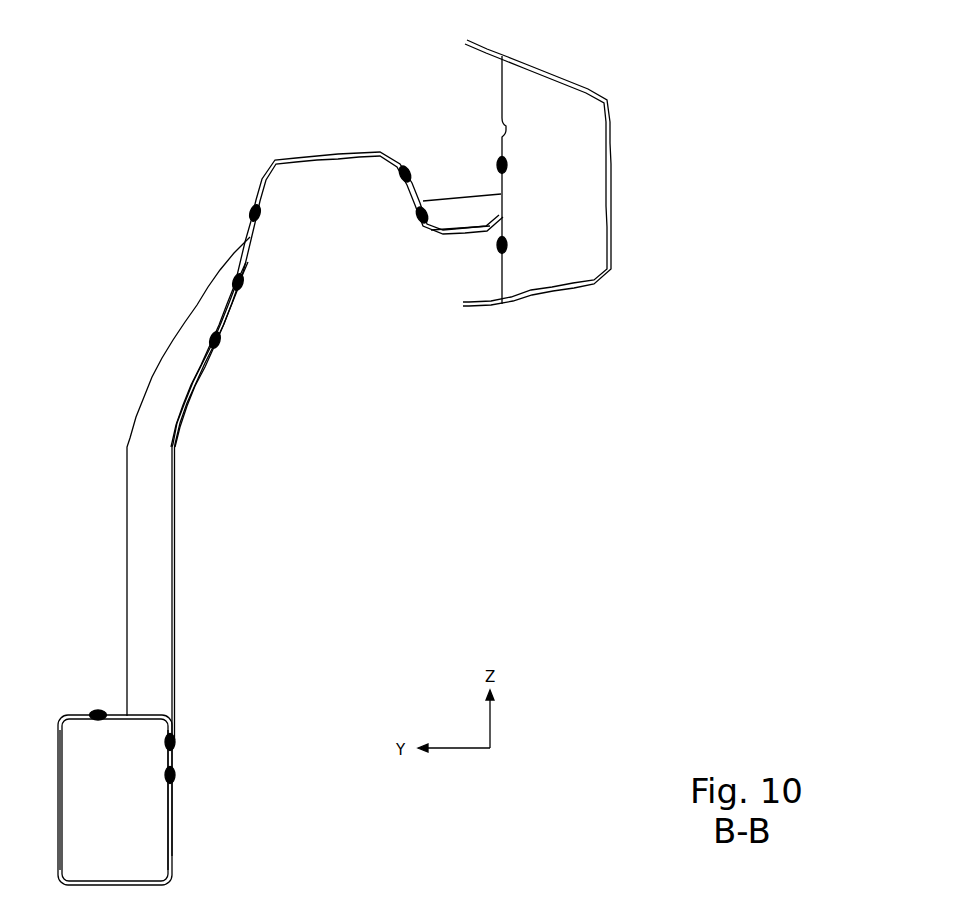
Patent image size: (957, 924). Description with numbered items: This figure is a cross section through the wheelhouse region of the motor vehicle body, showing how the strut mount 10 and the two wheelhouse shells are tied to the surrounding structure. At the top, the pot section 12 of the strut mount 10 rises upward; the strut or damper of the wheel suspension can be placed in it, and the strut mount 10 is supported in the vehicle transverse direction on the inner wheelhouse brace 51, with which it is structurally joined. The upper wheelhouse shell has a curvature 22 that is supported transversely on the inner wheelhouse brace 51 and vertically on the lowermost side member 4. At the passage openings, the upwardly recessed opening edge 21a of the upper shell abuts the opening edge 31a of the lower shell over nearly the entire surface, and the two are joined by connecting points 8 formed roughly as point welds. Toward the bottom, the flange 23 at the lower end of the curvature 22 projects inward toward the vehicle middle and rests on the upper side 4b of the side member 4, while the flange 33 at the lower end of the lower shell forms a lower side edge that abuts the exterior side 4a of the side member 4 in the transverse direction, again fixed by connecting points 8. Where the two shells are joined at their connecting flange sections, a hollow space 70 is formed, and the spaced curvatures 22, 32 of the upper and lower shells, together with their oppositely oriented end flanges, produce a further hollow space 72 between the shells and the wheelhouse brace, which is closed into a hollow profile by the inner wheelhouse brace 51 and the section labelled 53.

The strut mount 10 is at (330, 136).
The pot section 12 is at (252, 251).
The opening edge 21a is at (251, 205).
The curvature 22 is at (462, 195).
The flange 23 is at (125, 712).
The opening edge 31a is at (417, 208).
The curvature 32 is at (447, 237).
The flange 33 is at (175, 755).
The side member 4 is at (153, 838).
The exterior side 4a is at (168, 808).
The upper side 4b is at (68, 712).
The inner wheelhouse brace 51 is at (503, 195).
The bracket flange 53 is at (562, 290).
The hollow space 70 is at (153, 612).
The hollow space 72 is at (438, 212).
The connecting points 8 is at (507, 166).